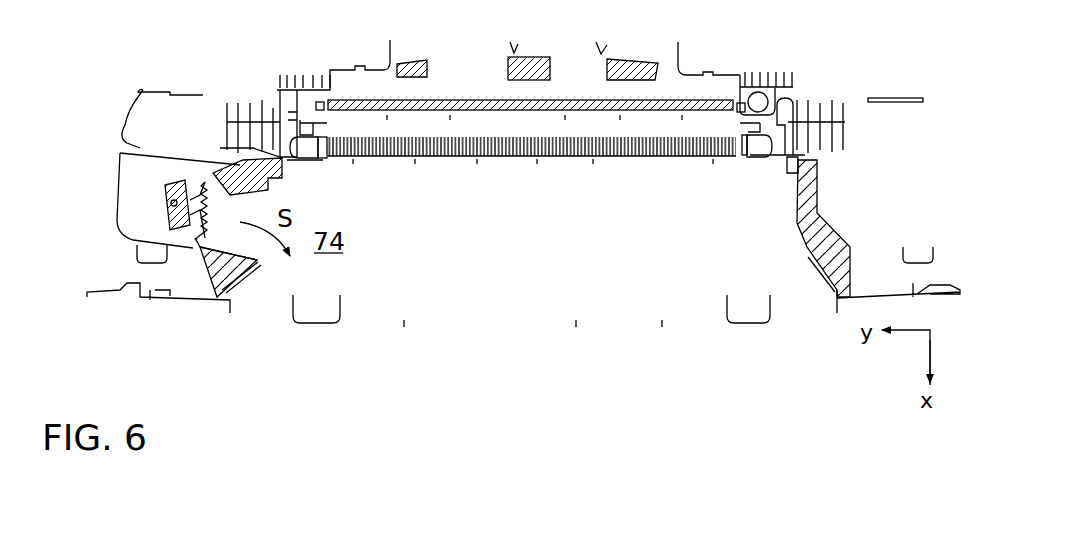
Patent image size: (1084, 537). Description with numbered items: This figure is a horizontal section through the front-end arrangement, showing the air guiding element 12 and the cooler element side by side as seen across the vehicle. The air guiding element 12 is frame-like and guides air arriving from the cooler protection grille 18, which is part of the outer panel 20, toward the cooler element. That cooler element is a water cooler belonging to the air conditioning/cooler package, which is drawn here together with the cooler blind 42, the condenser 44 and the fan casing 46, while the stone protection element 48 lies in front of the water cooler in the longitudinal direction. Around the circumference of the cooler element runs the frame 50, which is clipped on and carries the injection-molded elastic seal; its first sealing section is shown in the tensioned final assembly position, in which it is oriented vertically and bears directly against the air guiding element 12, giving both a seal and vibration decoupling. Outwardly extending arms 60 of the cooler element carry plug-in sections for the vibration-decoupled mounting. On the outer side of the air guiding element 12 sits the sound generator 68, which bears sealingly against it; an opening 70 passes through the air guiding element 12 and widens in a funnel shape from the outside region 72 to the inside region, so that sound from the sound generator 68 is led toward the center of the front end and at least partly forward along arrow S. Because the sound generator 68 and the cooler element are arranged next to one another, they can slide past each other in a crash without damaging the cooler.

The air guiding element 12 is at (837, 250).
The cooler protection grille 18 is at (490, 323).
The outer panel 20 is at (188, 294).
The cooler blind 42 is at (503, 120).
The condenser 44 is at (585, 108).
The fan casing 46 is at (627, 67).
The stone protection element 48 is at (652, 160).
The frame 50 is at (291, 157).
The arms 60 is at (262, 122).
The sound generator 68 is at (167, 207).
The opening 70 is at (250, 240).
The outside region 72 is at (113, 226).